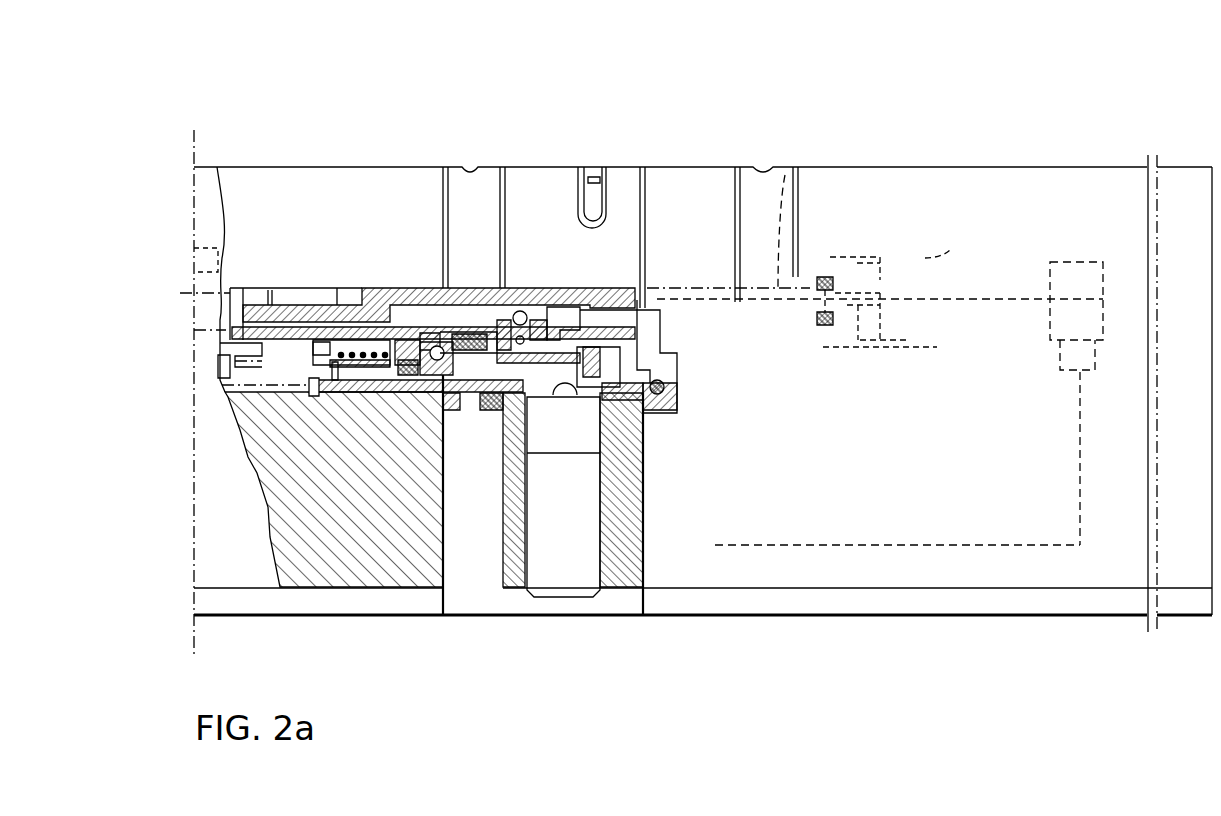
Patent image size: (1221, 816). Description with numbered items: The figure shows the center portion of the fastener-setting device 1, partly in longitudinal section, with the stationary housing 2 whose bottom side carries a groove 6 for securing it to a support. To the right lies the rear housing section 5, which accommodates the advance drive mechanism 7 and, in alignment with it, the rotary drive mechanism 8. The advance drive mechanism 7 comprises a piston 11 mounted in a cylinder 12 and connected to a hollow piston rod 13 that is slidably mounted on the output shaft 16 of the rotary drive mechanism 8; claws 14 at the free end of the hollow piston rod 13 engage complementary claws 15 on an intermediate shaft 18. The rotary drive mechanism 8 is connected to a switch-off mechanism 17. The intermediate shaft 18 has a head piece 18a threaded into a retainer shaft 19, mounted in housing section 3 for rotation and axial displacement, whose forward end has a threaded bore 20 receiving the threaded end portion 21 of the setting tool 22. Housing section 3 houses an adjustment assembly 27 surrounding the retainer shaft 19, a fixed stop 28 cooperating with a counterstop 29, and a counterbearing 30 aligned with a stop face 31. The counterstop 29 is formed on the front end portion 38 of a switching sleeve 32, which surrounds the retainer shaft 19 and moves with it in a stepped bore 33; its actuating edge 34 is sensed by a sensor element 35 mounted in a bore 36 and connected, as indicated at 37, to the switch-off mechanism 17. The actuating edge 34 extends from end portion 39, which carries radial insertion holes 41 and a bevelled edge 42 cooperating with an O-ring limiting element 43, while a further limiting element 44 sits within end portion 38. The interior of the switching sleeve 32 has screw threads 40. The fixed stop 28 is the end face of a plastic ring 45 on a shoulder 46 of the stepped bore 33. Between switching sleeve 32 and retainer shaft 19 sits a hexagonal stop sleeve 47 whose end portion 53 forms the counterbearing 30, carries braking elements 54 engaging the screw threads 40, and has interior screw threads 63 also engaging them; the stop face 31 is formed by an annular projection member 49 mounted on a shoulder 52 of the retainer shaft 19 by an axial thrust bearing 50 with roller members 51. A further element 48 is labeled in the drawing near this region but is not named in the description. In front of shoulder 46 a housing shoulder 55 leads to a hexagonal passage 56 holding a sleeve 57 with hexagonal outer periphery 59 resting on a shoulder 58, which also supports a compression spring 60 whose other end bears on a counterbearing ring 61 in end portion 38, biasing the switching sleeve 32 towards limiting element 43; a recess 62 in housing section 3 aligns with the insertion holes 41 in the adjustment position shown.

The device 1 is at (886, 167).
The housing 2 is at (970, 163).
The housing section 3 is at (238, 212).
The rear housing section 5 is at (1038, 193).
The groove 6 is at (963, 592).
The advance drive mechanism 7 is at (892, 256).
The rotary drive mechanism 8 is at (1068, 262).
The piston 11 is at (865, 262).
The cylinder 12 is at (925, 258).
The hollow piston rod 13 is at (850, 307).
The claws 14 is at (828, 330).
The complementary claws 15 is at (822, 275).
The output shaft 16 is at (1010, 300).
The switch-off mechanism 17 is at (1070, 353).
The intermediate shaft 18 is at (785, 175).
The head piece 18a is at (640, 308).
The retainer shaft 19 is at (395, 333).
The threaded bore 20 is at (357, 347).
The threaded end portion 21 is at (330, 325).
The setting tool 22 is at (250, 292).
The adjustment assembly 27 is at (462, 400).
The fixed stop 28 is at (383, 400).
The counterstop 29 is at (396, 400).
The counterbearing 30 is at (487, 348).
The stop face 31 is at (515, 318).
The switching sleeve 32 is at (605, 288).
The stepped bore 33 is at (477, 400).
The actuating edge 34 is at (580, 420).
The sensor element 35 is at (675, 405).
The bore 36 is at (645, 405).
The connection 37 is at (857, 547).
The front end portion 38 is at (425, 395).
The end portion 39 is at (655, 415).
The screw threads 40 is at (617, 325).
The radial insertion holes 41 is at (625, 352).
The bevelled edge 42 is at (680, 398).
The limiting element 43 is at (690, 392).
The limiting element 44 is at (415, 340).
The plastic ring 45 is at (376, 355).
The shoulder 46 is at (283, 588).
The stop sleeve 47 is at (390, 358).
The stop 48 is at (305, 352).
The annular projection member 49 is at (512, 310).
The axial thrust bearing 50 is at (548, 300).
The roller members 51 is at (535, 318).
The shoulder 52 is at (597, 180).
The end portion 53 is at (437, 346).
The braking elements 54 is at (458, 345).
The housing shoulder 55 is at (335, 358).
The passage 56 is at (322, 363).
The sleeve 57 is at (362, 352).
The shoulder 58 is at (350, 343).
The hexagonal outer periphery 59 is at (318, 300).
The compression spring 60 is at (372, 360).
The counterbearing ring 61 is at (405, 365).
The recess 62 is at (583, 268).
The interior screw threads 63 is at (530, 400).